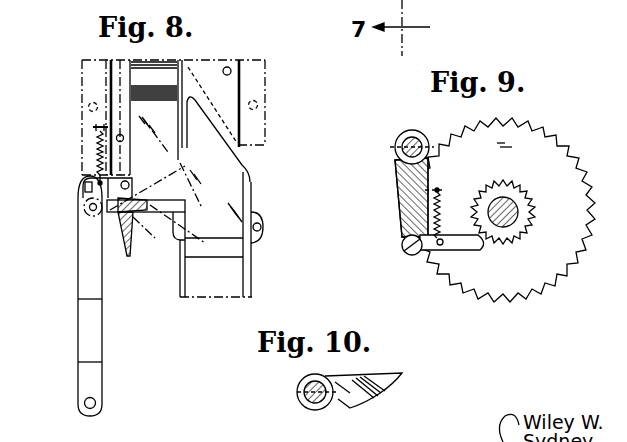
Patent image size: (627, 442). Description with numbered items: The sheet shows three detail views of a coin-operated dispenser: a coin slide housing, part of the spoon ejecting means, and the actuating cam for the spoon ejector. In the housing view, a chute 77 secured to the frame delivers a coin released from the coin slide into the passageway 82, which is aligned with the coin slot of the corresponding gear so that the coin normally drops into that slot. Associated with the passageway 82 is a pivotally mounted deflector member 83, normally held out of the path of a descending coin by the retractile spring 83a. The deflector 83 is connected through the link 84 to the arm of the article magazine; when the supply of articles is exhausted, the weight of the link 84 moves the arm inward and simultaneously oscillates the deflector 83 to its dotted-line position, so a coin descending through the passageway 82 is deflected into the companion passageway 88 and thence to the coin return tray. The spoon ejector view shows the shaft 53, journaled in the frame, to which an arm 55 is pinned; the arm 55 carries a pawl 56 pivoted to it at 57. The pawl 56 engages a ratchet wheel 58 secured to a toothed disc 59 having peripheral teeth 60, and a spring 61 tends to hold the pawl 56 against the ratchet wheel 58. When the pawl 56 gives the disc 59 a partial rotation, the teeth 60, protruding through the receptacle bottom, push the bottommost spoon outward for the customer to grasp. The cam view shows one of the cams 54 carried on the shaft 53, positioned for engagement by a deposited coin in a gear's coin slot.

In FIG. 9, the shaft 53 is at (413, 137).
In FIG. 10, the shaft 53 is at (308, 385).
In FIG. 10, the cam 54 is at (378, 382).
In FIG. 9, the arm 55 is at (407, 183).
In FIG. 9, the pawl 56 is at (463, 248).
In FIG. 9, the pivot 57 is at (405, 250).
In FIG. 9, the ratchet wheel 58 is at (530, 203).
In FIG. 9, the toothed disc 59 is at (496, 156).
In FIG. 9, the peripheral teeth 60 is at (572, 150).
In FIG. 9, the spring 61 is at (441, 198).
In FIG. 8, the chute 77 is at (253, 192).
In FIG. 8, the passageway 82 is at (156, 117).
In FIG. 8, the deflector member 83 is at (118, 258).
In FIG. 8, the retractile spring 83a is at (97, 163).
In FIG. 8, the link 84 is at (92, 327).
In FIG. 8, the companion passageway 88 is at (176, 203).